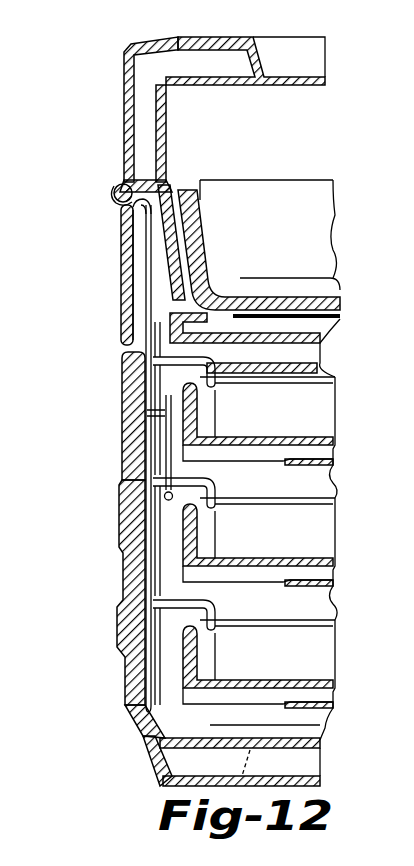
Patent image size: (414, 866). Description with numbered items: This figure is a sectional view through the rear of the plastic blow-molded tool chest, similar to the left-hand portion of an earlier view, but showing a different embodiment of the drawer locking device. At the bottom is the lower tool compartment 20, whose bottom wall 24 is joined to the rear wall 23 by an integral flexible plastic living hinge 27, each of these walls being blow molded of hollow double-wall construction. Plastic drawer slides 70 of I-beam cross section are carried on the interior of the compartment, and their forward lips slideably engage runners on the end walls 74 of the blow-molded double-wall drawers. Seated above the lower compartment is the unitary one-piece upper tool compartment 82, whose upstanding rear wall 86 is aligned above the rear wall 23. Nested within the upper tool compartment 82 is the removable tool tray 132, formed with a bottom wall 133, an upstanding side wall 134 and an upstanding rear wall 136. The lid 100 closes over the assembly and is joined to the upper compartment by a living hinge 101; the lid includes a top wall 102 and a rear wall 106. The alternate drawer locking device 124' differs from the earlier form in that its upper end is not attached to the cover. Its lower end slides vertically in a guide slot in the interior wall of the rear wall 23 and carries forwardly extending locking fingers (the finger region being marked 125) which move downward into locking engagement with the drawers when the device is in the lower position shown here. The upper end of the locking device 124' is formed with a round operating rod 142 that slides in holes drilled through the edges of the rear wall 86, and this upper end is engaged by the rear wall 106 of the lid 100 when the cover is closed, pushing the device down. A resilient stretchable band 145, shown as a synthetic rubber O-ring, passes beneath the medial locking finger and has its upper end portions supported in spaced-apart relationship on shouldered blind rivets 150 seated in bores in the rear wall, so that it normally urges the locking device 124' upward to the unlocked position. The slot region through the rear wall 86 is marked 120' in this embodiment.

The lid 100 is at (116, 62).
The top wall 102 is at (308, 72).
The rear wall of the cover 106 is at (124, 128).
The living hinge 101 is at (114, 192).
The retaining hook 120' is at (100, 220).
The rear wall of the upper compartment 86 is at (122, 252).
The upper tool compartment 82 is at (108, 282).
The operating rod 142 is at (148, 285).
The rear wall of the tool tray 136 is at (198, 198).
The removable tool tray 132 is at (350, 212).
The side wall of the tool tray 134 is at (283, 237).
The bottom wall of the tool tray 133 is at (336, 282).
The drawer slide 70 is at (328, 372).
The end wall of the drawer 74 is at (300, 422).
The shouldered blind rivet 150 is at (132, 420).
The stretchable band 145 is at (166, 458).
The hook 125 is at (212, 503).
The drawer locking device 124' is at (215, 647).
The rear wall 23 is at (117, 645).
The lower tool compartment 20 is at (110, 678).
The living hinge 27 is at (148, 742).
The bottom wall 24 is at (320, 772).